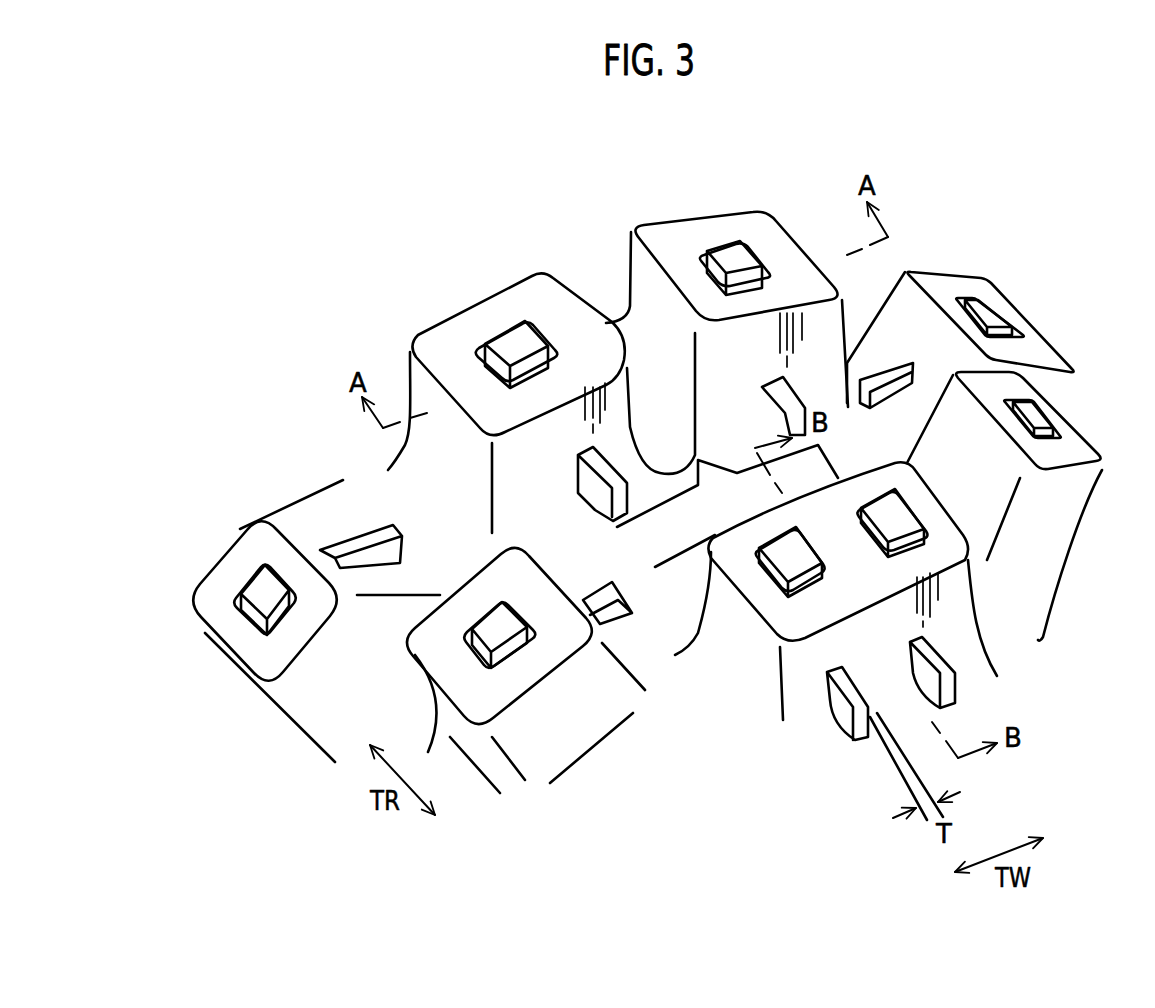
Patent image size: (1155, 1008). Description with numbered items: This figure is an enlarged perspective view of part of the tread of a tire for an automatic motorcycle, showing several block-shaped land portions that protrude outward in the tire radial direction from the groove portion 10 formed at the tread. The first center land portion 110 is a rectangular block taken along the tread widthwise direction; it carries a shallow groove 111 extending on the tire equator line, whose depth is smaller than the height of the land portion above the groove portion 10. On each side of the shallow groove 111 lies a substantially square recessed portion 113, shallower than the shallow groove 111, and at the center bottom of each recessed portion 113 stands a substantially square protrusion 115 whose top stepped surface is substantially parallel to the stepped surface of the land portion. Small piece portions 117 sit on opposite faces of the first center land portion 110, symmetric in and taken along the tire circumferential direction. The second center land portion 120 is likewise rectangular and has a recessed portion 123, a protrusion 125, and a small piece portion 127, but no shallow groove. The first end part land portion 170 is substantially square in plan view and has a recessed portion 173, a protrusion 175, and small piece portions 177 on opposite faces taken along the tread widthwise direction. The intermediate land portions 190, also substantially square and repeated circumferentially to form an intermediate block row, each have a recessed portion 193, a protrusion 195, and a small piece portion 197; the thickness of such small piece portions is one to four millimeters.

The groove portion 10 is at (872, 357).
The first center land portion 110 is at (788, 193).
The shallow groove 111 is at (603, 283).
The recessed portion 113 is at (485, 345).
The protrusion 115 is at (514, 343).
The small piece portion 117 is at (783, 423).
The second center land portion 120 is at (968, 528).
The recessed portion 123 is at (930, 537).
The protrusion 125 is at (892, 507).
The small piece portion 127 is at (997, 678).
The first end part land portion 170 is at (238, 535).
The recessed portion 173 is at (266, 580).
The protrusion 175 is at (232, 605).
The small piece portion 177 is at (380, 530).
The intermediate land portion 190 is at (483, 590).
The recessed portion 193 is at (520, 632).
The protrusion 195 is at (500, 633).
The small piece portion 197 is at (612, 602).